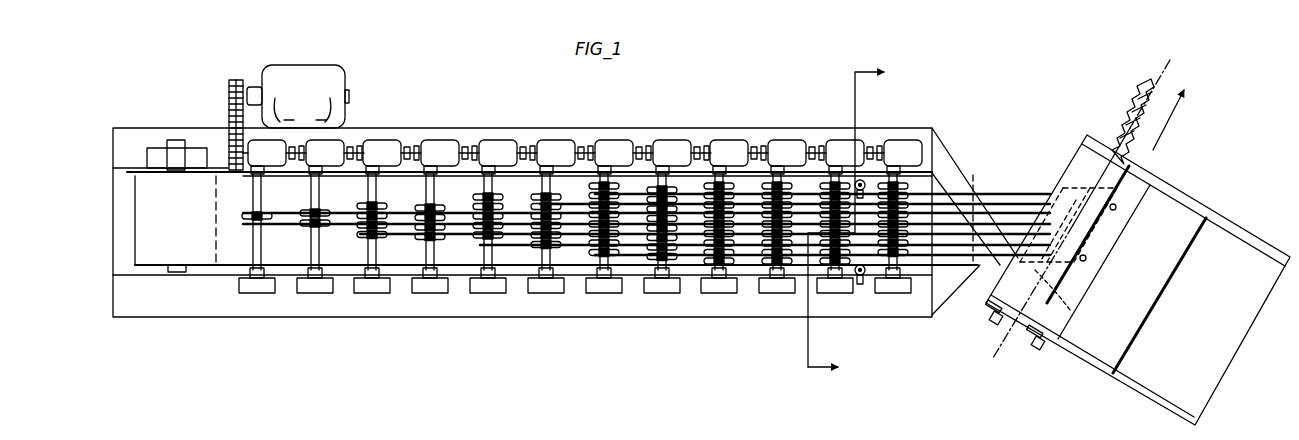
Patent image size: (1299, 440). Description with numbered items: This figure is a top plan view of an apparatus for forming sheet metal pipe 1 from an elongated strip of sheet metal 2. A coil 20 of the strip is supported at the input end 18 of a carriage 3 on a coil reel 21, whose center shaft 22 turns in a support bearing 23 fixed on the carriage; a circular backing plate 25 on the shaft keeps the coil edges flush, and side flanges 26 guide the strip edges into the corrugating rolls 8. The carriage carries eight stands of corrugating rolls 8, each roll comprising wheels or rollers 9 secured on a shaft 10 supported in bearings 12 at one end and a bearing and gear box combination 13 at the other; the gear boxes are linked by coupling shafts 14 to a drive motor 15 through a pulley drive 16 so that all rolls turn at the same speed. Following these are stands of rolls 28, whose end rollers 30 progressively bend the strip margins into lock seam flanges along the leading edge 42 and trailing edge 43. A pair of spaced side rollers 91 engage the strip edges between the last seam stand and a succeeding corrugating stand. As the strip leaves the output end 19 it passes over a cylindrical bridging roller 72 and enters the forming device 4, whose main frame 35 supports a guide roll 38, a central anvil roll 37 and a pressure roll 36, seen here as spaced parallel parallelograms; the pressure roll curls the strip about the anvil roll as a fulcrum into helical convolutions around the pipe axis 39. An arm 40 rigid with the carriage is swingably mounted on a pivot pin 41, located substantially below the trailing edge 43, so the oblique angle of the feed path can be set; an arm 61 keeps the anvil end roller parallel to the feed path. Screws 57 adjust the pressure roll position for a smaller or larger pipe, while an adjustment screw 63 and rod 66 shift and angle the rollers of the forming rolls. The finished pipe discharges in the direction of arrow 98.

The sheet metal pipe 1 is at (1137, 93).
The strip of sheet metal 2 is at (287, 258).
The carriage 3 is at (573, 126).
The forming device 4 is at (1070, 150).
The corrugating rolls 8 is at (368, 197).
The wheels or rollers 9 is at (260, 220).
The shaft 10 is at (311, 242).
The bearings 12 is at (483, 287).
The bearing and gear box combination 13 is at (383, 148).
The coupling shafts 14 is at (458, 150).
The drive motor 15 is at (328, 75).
The pulley drive 16 is at (232, 115).
The input end 18 is at (220, 318).
The output end 19 is at (873, 312).
The coil 20 is at (168, 264).
The coil reel 21 is at (158, 140).
The center shaft 22 is at (167, 270).
The support bearing 23 is at (176, 140).
The circular backing plate 25 is at (140, 167).
The side flanges 26 is at (347, 172).
The rolls 28 is at (818, 178).
The end rollers 30 is at (778, 188).
The main frame 35 is at (1148, 396).
The pressure roll 36 is at (1090, 242).
The central anvil roll 37 is at (1084, 222).
The guide roll 38 is at (1062, 186).
The pipe axis 39 is at (992, 342).
The arm 40 is at (947, 148).
The pivot pin 41 is at (1054, 297).
The leading edge 42 is at (1023, 190).
The trailing edge 43 is at (956, 290).
The screws 57 is at (1116, 207).
The arm 61 is at (1016, 291).
The adjustment screw 63 is at (992, 322).
The rod 66 is at (992, 311).
The cylindrical bridging roller 72 is at (973, 175).
The side rollers 91 is at (858, 180).
The arrow 98 is at (1158, 134).